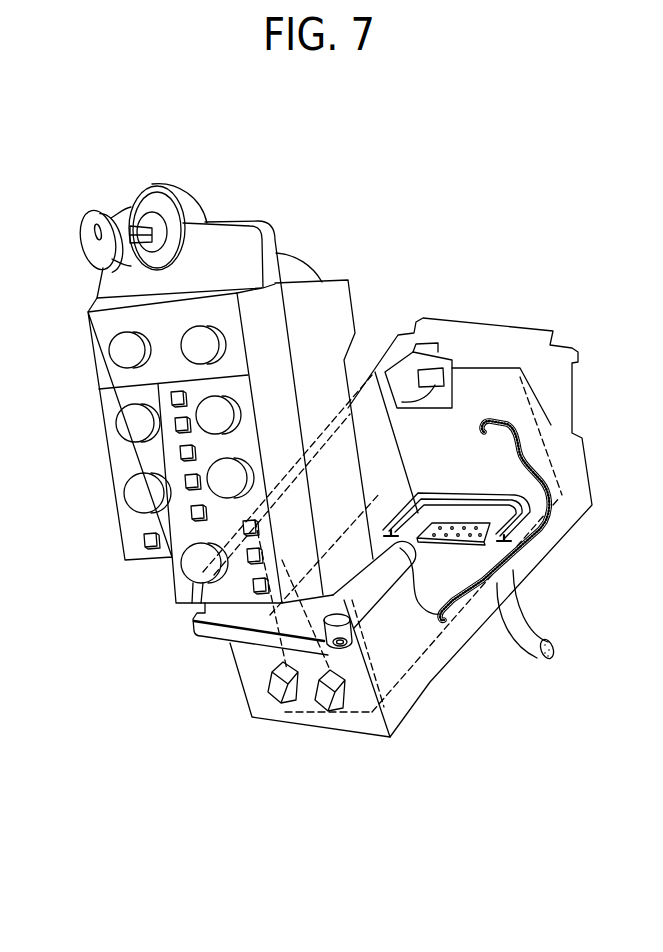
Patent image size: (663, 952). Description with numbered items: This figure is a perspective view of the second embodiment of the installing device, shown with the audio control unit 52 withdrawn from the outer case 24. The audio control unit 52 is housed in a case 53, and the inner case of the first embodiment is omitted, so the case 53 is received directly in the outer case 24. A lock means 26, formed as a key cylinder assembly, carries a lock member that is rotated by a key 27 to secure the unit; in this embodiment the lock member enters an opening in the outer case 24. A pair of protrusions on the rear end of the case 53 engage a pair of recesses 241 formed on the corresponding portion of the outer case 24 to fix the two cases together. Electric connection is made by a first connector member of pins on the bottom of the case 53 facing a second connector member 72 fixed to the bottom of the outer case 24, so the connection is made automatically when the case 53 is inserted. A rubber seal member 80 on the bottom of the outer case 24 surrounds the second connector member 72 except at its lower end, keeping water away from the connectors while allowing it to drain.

The outer case 24 is at (480, 337).
The lock means 26 is at (172, 228).
The key 27 is at (92, 268).
The audio control unit 52 is at (103, 385).
The case 53 is at (328, 292).
The second connector member 72 is at (465, 544).
The seal member 80 is at (546, 518).
The recesses 241 is at (276, 704).